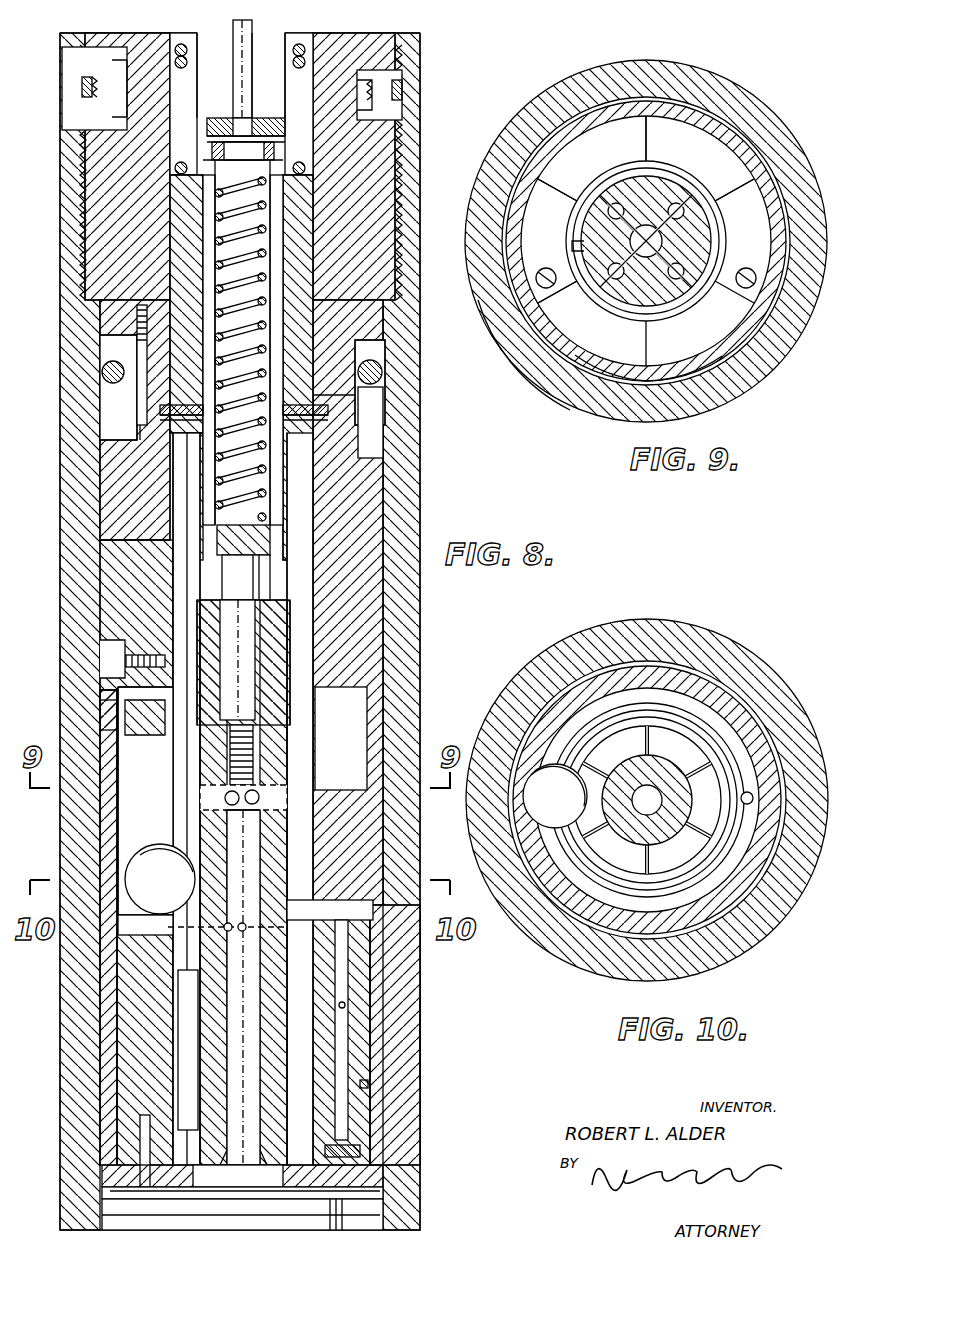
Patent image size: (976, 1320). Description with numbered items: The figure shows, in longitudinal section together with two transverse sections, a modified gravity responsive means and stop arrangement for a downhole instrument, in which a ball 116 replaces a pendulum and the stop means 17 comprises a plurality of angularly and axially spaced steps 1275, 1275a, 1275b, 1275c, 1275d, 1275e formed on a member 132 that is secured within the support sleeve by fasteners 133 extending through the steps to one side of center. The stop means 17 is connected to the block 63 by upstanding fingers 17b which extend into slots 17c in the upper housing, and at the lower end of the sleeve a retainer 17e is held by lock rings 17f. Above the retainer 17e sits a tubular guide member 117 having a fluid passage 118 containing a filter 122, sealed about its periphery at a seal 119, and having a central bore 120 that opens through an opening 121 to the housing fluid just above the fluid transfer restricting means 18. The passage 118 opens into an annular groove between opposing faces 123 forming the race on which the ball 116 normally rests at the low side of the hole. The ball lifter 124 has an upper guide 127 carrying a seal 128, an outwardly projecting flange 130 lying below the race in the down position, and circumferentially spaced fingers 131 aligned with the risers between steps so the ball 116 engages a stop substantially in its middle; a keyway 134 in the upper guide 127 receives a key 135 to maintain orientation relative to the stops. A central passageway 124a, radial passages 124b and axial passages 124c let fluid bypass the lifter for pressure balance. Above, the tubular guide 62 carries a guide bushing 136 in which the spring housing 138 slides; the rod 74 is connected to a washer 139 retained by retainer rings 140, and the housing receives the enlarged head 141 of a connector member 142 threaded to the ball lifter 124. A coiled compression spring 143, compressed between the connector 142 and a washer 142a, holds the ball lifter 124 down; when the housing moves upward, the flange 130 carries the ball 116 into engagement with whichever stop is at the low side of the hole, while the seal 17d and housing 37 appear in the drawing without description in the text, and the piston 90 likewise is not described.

In FIG. 8, the stop means 17 is at (110, 705).
In FIG. 8, the upstanding fingers 17b is at (350, 395).
In FIG. 8, the slots 17c is at (372, 405).
In FIG. 8, the O-ring seal 17d is at (382, 372).
In FIG. 8, the retainer 17e is at (370, 1173).
In FIG. 8, the lock rings 17f is at (360, 1191).
In FIG. 8, the fluid transfer restricting means 18 is at (355, 1216).
In FIG. 8, the outer housing 37 is at (420, 1038).
In FIG. 9, the outer housing 37 is at (533, 398).
In FIG. 10, the outer housing 37 is at (647, 632).
In FIG. 8, the tubular guide 62 is at (195, 115).
In FIG. 8, the block 63 is at (105, 410).
In FIG. 8, the rod 74 is at (238, 55).
In FIG. 8, the piston 90 is at (248, 598).
In FIG. 8, the ball 116 is at (143, 876).
In FIG. 10, the ball 116 is at (548, 772).
In FIG. 8, the tubular guide member 117 is at (355, 978).
In FIG. 8, the fluid passage 118 is at (345, 1005).
In FIG. 10, the fluid passage 118 is at (752, 794).
In FIG. 8, the seal 119 is at (365, 1085).
In FIG. 8, the central bore 120 is at (182, 1057).
In FIG. 8, the opening 121 is at (135, 1190).
In FIG. 8, the filter 122 is at (345, 1152).
In FIG. 8, the opposing faces 123 is at (330, 908).
In FIG. 10, the opposing faces 123 is at (660, 718).
In FIG. 8, the ball lifter 124 is at (52, 823).
In FIG. 9, the ball lifter 124 is at (666, 286).
In FIG. 8, the central passageway 124a is at (255, 860).
In FIG. 9, the central passageway 124a is at (643, 234).
In FIG. 10, the central passageway 124a is at (658, 790).
In FIG. 8, the radial passages 124b is at (252, 800).
In FIG. 9, the radial passages 124b is at (663, 238).
In FIG. 8, the axial passages 124c is at (295, 740).
In FIG. 9, the axial passages 124c is at (624, 280).
In FIG. 8, the upper guide 127 is at (170, 640).
In FIG. 8, the seal 128 is at (305, 635).
In FIG. 8, the flange 130 is at (170, 965).
In FIG. 10, the flange 130 is at (608, 846).
In FIG. 8, the fingers 131 is at (190, 922).
In FIG. 10, the fingers 131 is at (690, 828).
In FIG. 8, the member 132 is at (320, 725).
In FIG. 8, the fasteners 133 is at (140, 640).
In FIG. 9, the fasteners 133 is at (538, 280).
In FIG. 8, the keyway 134 is at (175, 790).
In FIG. 8, the key 135 is at (108, 660).
In FIG. 8, the guide bushing 136 is at (183, 400).
In FIG. 8, the spring housing 138 is at (213, 214).
In FIG. 8, the washer 139 is at (262, 130).
In FIG. 8, the retainer rings 140 is at (262, 150).
In FIG. 8, the enlarged head 141 is at (270, 530).
In FIG. 8, the connector member 142 is at (300, 603).
In FIG. 8, the washer 142a is at (297, 150).
In FIG. 8, the coiled compression spring 143 is at (215, 253).
In FIG. 8, the step 1275 is at (112, 728).
In FIG. 9, the step 1275 is at (610, 360).
In FIG. 9, the step 1275a is at (710, 375).
In FIG. 8, the step 1275b is at (342, 773).
In FIG. 9, the step 1275b is at (748, 208).
In FIG. 9, the step 1275c is at (678, 125).
In FIG. 9, the step 1275d is at (585, 160).
In FIG. 8, the step 1275e is at (148, 700).
In FIG. 9, the step 1275e is at (540, 222).